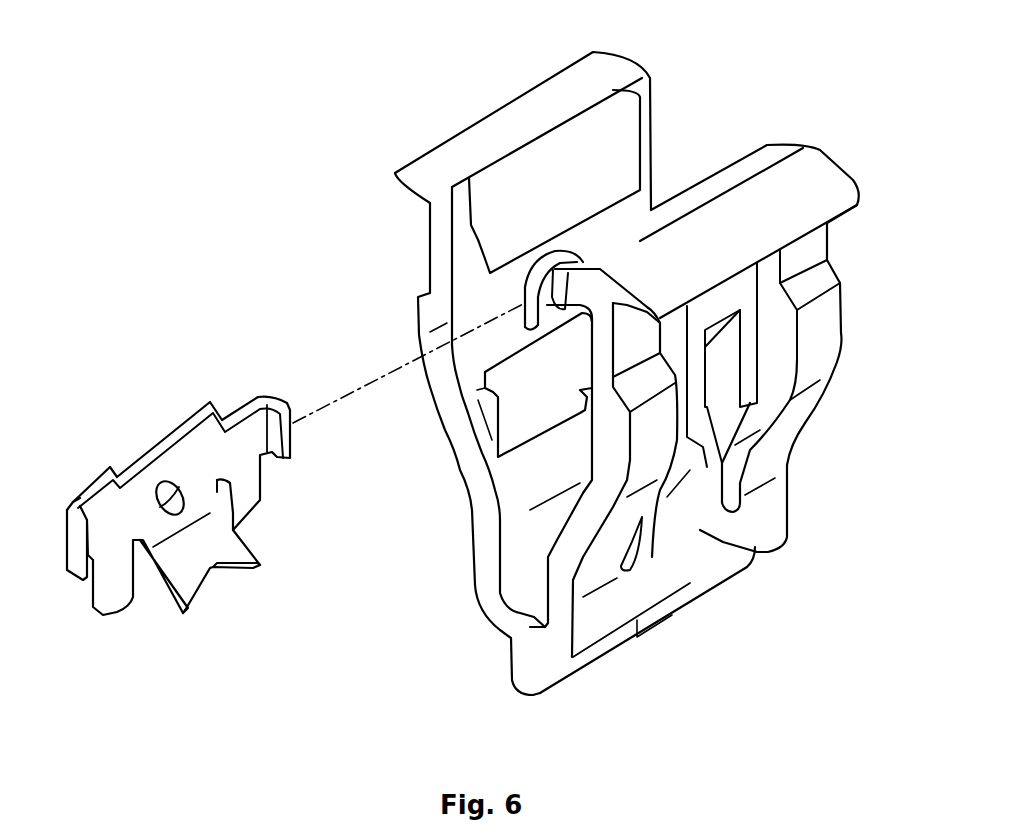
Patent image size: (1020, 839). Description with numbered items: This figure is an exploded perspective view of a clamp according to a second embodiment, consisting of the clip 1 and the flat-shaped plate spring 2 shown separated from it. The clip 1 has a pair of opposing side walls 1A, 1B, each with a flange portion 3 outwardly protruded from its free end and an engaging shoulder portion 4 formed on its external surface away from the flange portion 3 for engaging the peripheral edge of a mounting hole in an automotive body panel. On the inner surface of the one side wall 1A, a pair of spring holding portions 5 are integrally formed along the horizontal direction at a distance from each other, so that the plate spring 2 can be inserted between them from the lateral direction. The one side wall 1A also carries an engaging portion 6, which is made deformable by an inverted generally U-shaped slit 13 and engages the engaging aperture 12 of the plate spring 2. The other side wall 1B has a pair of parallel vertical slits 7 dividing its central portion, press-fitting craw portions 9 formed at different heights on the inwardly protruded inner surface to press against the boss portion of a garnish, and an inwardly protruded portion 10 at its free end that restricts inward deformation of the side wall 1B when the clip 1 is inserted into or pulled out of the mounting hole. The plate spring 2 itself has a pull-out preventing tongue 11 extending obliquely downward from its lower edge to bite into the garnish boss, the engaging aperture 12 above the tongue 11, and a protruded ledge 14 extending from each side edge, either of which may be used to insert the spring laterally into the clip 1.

The clip 1 is at (376, 142).
The one side wall 1A is at (472, 562).
The other side wall 1B is at (700, 530).
The plate spring 2 is at (78, 457).
The flange portion 3 is at (840, 192).
The engaging shoulder portion 4 is at (425, 288).
The spring holding portion 5 is at (552, 166).
The engaging portion 6 is at (592, 300).
The vertical slit 7 is at (737, 460).
The press-fitting craw portion 9 is at (577, 391).
The inwardly protruded portion 10 is at (703, 185).
The pull-out preventing tongue 11 is at (183, 587).
The engaging aperture 12 is at (167, 485).
The inverted generally U-shaped slit 13 is at (525, 305).
The protruded ledge 14 is at (285, 398).